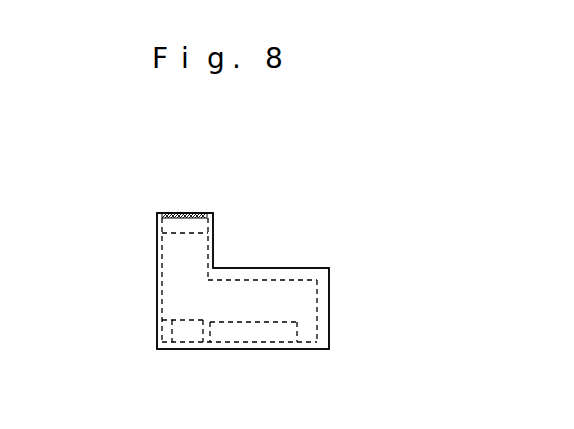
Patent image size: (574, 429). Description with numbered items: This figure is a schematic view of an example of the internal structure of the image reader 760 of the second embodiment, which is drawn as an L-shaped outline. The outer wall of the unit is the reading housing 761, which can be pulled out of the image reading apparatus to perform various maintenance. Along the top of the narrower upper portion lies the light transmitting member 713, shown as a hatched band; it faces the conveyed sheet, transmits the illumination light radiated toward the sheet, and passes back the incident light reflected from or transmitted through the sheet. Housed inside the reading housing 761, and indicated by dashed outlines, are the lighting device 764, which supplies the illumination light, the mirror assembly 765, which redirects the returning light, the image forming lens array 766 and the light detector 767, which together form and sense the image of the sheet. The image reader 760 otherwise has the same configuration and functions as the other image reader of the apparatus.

The image reader 760 is at (278, 172).
The light transmitting member 713 is at (213, 213).
The lighting device 764 is at (173, 223).
The mirror assembly 765 is at (182, 269).
The reading housing 761 is at (213, 350).
The light detector 767 is at (190, 333).
The image forming lens array 766 is at (258, 330).